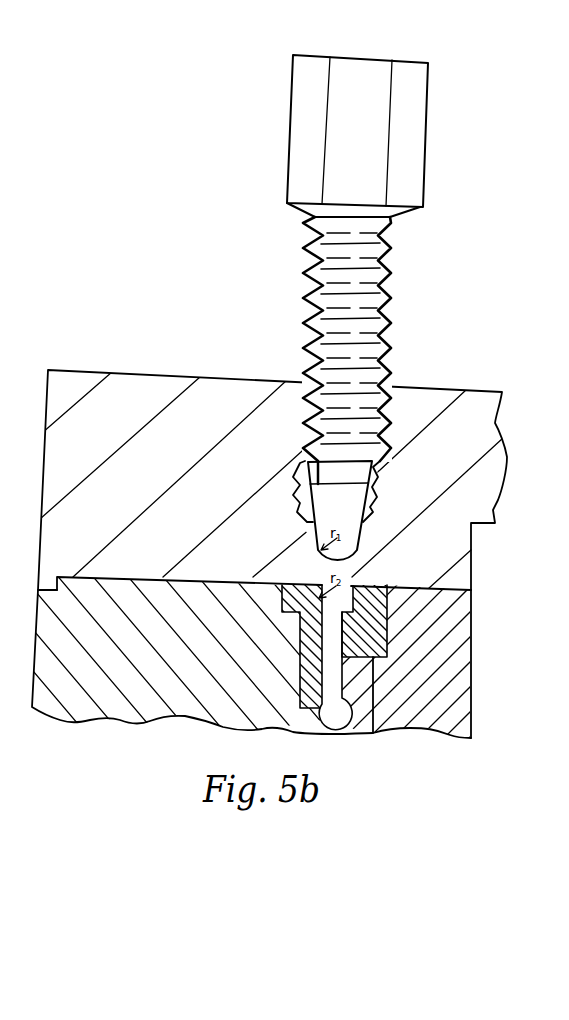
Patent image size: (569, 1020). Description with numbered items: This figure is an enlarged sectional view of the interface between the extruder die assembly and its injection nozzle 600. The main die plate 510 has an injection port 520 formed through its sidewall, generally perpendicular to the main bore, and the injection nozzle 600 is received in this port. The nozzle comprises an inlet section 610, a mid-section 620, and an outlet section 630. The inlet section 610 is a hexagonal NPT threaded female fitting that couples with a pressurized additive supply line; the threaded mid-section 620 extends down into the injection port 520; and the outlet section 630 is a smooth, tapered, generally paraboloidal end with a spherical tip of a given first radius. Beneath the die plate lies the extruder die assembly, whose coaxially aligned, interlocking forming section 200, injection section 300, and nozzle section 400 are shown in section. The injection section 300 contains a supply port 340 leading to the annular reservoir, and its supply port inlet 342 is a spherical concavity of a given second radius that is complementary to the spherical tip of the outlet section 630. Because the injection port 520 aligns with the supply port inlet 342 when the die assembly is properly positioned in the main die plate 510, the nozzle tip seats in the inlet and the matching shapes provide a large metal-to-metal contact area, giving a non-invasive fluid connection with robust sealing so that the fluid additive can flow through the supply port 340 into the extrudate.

The injection nozzle 600 is at (374, 307).
The inlet section 610 is at (293, 142).
The mid-section 620 is at (300, 462).
The outlet section 630 is at (368, 518).
The injection port 520 is at (371, 472).
The main die plate 510 is at (188, 488).
The nozzle section 400 is at (193, 665).
The forming section 200 is at (445, 688).
The supply port 340 is at (284, 586).
The supply port inlet 342 is at (352, 604).
The injection section 300 is at (373, 733).